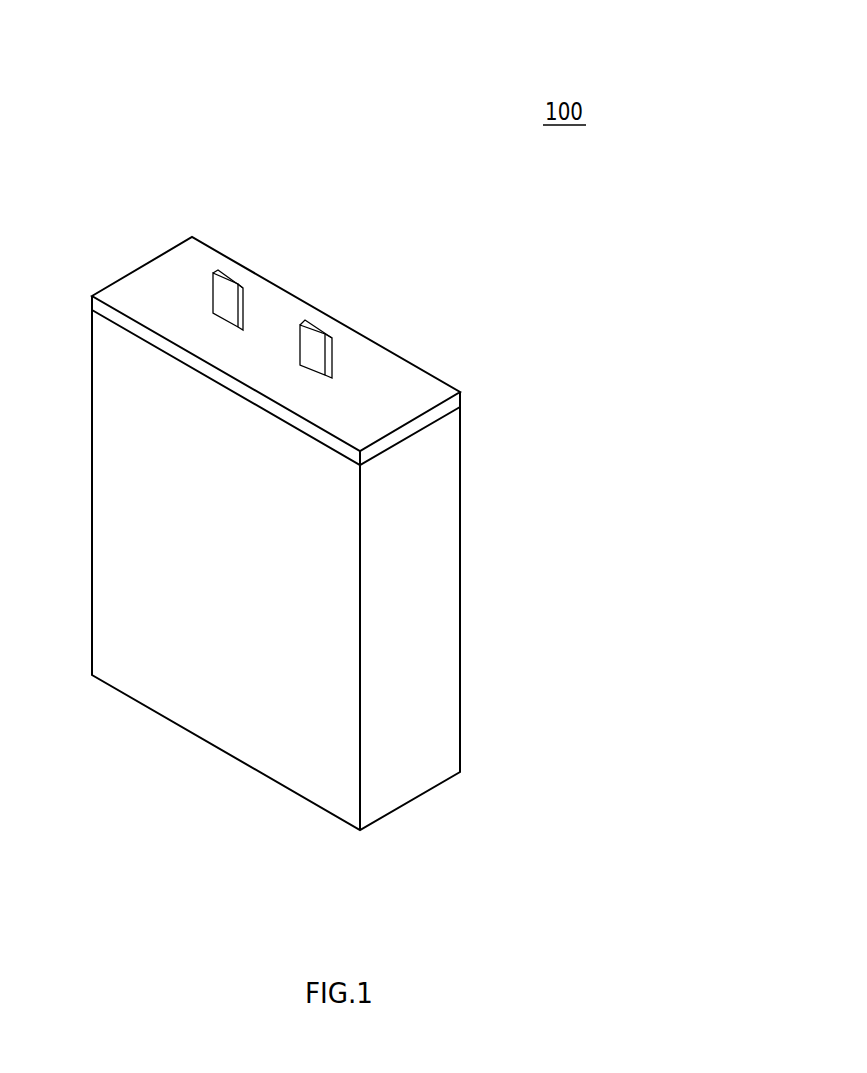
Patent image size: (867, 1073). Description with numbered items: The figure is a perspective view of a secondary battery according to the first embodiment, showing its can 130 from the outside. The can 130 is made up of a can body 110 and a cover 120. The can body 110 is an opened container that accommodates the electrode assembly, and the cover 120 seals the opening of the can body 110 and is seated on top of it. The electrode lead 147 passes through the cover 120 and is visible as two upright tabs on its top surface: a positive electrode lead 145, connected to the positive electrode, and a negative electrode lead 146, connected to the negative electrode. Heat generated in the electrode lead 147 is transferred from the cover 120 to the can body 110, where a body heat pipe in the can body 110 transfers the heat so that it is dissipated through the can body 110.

The can body 110 is at (435, 566).
The cover 120 is at (405, 394).
The can 130 is at (398, 533).
The positive electrode lead 145 is at (315, 330).
The negative electrode lead 146 is at (232, 278).
The electrode lead 147 is at (291, 275).